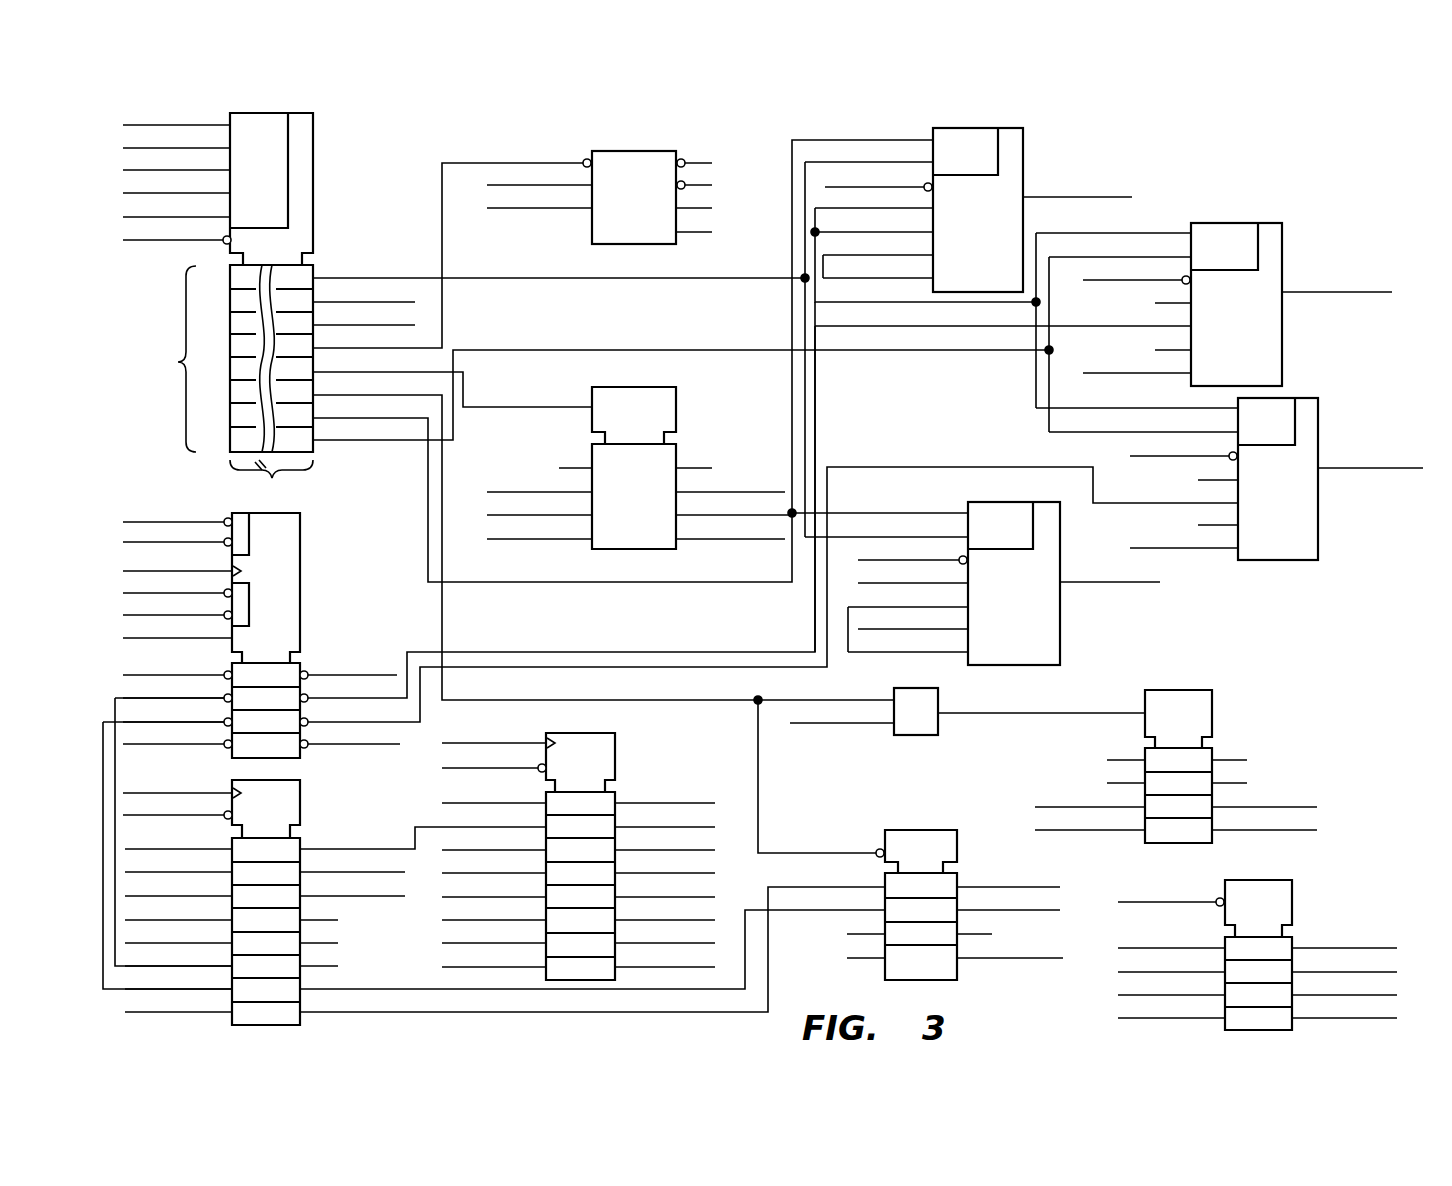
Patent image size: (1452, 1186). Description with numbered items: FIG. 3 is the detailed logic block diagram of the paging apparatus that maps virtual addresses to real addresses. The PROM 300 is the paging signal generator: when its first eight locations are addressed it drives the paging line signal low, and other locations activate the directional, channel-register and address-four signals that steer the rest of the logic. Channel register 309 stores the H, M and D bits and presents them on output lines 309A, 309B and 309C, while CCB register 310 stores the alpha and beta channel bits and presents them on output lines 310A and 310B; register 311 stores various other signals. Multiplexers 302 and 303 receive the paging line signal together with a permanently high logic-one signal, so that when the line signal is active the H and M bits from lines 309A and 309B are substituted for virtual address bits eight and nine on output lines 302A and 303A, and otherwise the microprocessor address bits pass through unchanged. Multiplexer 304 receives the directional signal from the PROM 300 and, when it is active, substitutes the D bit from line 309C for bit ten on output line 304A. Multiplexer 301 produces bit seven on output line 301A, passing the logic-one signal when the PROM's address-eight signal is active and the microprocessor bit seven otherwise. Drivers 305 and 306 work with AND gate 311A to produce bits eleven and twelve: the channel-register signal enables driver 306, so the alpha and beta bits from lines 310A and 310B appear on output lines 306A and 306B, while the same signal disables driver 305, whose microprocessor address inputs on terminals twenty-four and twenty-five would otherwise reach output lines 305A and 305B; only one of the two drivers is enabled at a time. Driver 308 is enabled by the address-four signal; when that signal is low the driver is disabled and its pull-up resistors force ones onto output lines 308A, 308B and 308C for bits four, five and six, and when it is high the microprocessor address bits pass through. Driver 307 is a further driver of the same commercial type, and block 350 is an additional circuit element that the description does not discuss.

The PROM 300 is at (313, 192).
The multiplexer 301 is at (1014, 208).
The output line of multiplexer 301 301A is at (1130, 197).
The multiplexer 302 is at (1114, 434).
The output line of multiplexer 302 302A is at (1335, 292).
The multiplexer 303 is at (1284, 476).
The output line of multiplexer 303 303A is at (1372, 470).
The multiplexer 304 is at (1018, 581).
The output line of multiplexer 304 304A is at (1118, 582).
The driver 305 is at (1218, 766).
The output line of driver 305 305A is at (1317, 809).
The output line of driver 305 305B is at (1305, 832).
The driver 306 is at (951, 890).
The output line of driver 306 306A is at (1060, 887).
The output line of driver 306 306B is at (1047, 912).
The driver 307 is at (1293, 905).
The driver 308 is at (641, 478).
The output line of driver 308 308A is at (699, 541).
The output line of driver 308 308B is at (785, 521).
The output line of driver 308 308C is at (781, 478).
The channel register 309 is at (680, 554).
The output line of channel register 309 309A is at (562, 650).
The output line of channel register 309 309B is at (592, 669).
The output line of channel register 309 309C is at (395, 746).
The CCB register 310 is at (504, 911).
The output line of register 310 310A is at (530, 992).
The output line of register 310 310B is at (488, 1014).
The register 311 is at (617, 750).
The AND gate 311A is at (940, 730).
The decoder 350 is at (642, 246).